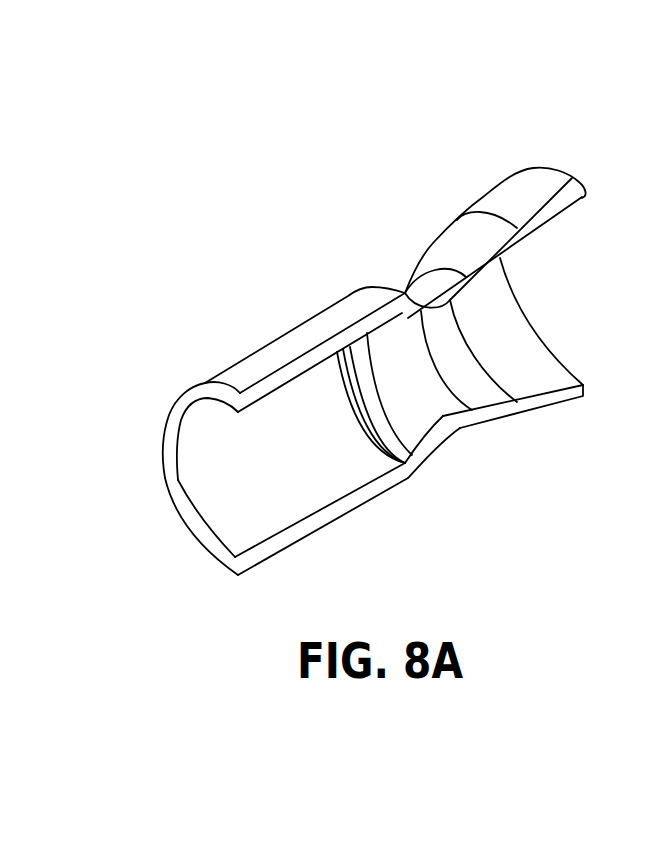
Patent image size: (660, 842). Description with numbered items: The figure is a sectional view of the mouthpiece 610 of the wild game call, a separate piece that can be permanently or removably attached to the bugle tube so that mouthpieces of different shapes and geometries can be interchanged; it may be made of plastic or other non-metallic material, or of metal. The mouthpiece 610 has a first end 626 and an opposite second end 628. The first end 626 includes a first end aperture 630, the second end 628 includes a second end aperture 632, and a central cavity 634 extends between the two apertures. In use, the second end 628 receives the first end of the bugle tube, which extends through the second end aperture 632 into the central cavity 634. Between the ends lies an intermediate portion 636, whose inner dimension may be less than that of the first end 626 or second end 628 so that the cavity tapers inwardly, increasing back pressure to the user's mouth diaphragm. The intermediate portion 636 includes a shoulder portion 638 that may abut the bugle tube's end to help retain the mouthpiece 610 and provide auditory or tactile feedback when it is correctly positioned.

The mouthpiece 610 is at (350, 126).
The first end 626 is at (583, 398).
The second end 628 is at (193, 528).
The first end aperture 630 is at (520, 318).
The second end aperture 632 is at (180, 452).
The central cavity 634 is at (293, 512).
The intermediate portion 636 is at (452, 425).
The shoulder portion 638 is at (403, 447).